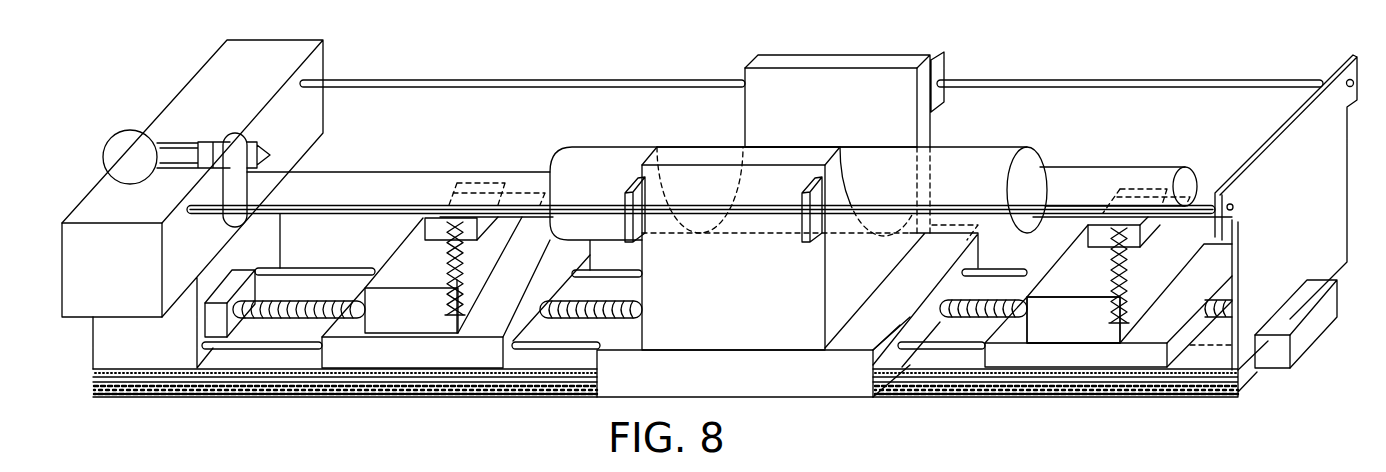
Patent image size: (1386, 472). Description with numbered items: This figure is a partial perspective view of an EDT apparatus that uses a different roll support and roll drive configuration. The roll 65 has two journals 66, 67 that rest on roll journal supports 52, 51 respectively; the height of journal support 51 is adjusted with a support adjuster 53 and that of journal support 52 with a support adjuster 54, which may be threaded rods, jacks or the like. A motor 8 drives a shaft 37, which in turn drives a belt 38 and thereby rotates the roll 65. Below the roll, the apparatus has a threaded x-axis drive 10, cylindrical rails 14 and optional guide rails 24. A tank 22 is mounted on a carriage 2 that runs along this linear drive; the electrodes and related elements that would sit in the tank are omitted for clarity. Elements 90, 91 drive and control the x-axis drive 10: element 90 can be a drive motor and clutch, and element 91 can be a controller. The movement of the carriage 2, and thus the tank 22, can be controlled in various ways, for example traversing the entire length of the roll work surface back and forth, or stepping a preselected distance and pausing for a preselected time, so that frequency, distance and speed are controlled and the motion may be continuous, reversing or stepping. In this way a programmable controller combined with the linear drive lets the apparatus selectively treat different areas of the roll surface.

The carriage 2 is at (735, 385).
The motor 8 is at (138, 170).
The threaded x-axis drive 10 is at (973, 317).
The cylindrical rails 14 is at (547, 348).
The tank 22 is at (746, 295).
The guide rails 24 is at (505, 82).
The shaft 37 is at (212, 152).
The belt 38 is at (234, 134).
The roll journal support 51 is at (432, 229).
The roll journal support 52 is at (1102, 240).
The support adjuster 53 is at (447, 283).
The support adjuster 54 is at (1113, 306).
The roll 65 is at (996, 160).
The journal 66 is at (1088, 170).
The journal 67 is at (376, 188).
The drive motor and clutch 90 is at (1302, 307).
The controller 91 is at (214, 325).